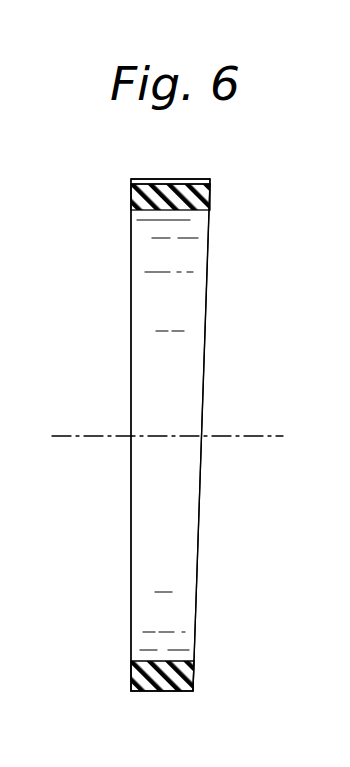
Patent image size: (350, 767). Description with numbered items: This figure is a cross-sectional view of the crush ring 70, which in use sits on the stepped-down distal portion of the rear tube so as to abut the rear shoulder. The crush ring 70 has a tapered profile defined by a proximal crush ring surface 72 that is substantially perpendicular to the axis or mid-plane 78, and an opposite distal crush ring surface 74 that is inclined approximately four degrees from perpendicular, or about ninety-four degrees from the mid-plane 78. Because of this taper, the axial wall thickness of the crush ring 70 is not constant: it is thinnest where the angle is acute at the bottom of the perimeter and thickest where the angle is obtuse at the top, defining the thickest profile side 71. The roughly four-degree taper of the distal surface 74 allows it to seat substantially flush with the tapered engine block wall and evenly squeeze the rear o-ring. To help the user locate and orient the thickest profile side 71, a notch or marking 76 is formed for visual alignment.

The crush ring 70 is at (80, 607).
The thickest profile side 71 is at (108, 187).
The proximal crush ring surface 72 is at (131, 478).
The distal crush ring surface 74 is at (202, 408).
The notch or marking 76 is at (173, 182).
The axis or mid-plane 78 is at (91, 435).